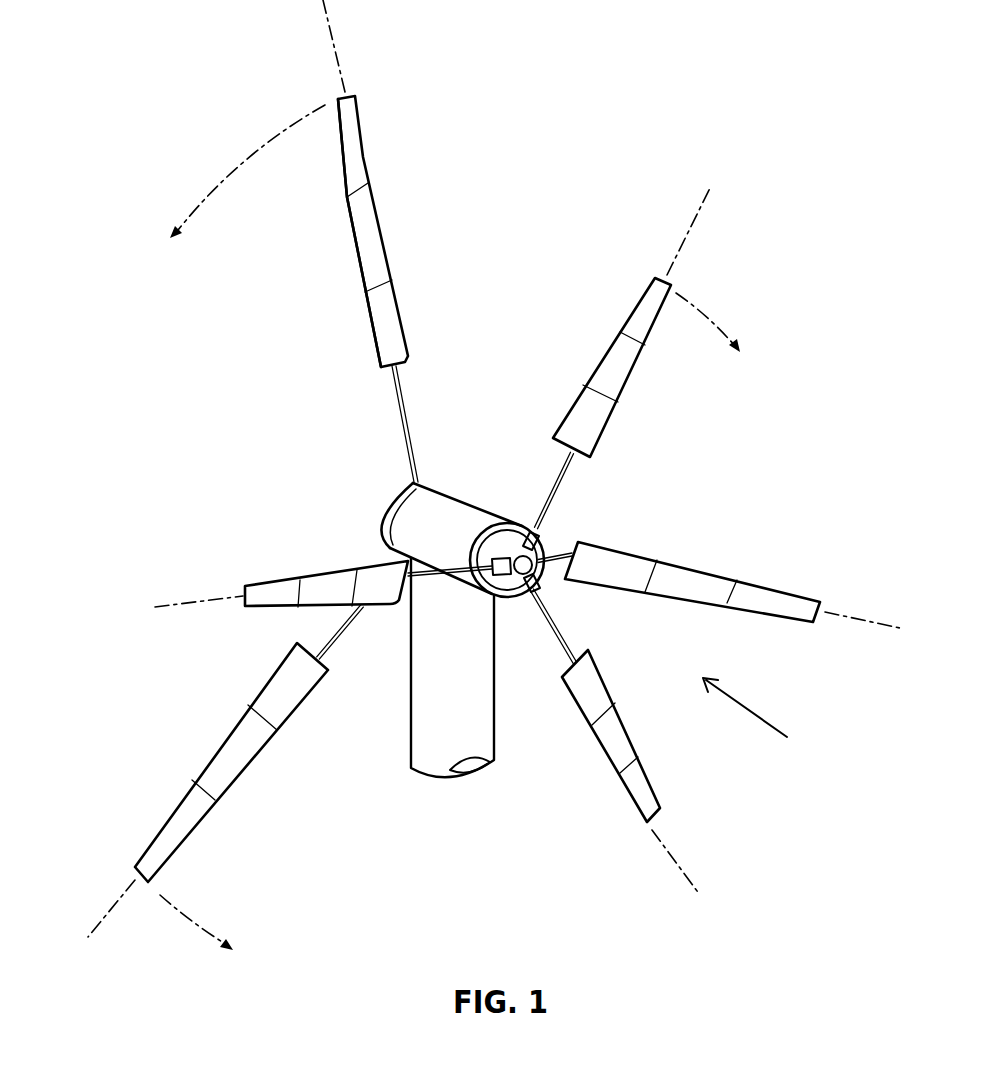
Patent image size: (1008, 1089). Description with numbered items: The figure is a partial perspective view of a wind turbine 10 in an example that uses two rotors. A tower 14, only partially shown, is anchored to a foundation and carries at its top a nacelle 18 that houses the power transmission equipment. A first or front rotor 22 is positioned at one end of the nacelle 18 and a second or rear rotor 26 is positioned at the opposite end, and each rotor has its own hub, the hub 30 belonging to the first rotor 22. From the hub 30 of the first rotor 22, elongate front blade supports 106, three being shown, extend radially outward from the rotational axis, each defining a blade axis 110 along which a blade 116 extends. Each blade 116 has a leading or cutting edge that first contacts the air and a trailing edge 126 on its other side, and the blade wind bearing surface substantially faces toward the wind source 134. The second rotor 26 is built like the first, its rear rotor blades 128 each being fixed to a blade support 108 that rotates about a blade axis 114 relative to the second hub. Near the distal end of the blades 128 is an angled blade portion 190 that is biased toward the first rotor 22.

The wind turbine 10 is at (805, 321).
The tower 14 is at (426, 722).
The nacelle 18 is at (380, 502).
The first rotor 22 is at (645, 389).
The second rotor 26 is at (355, 344).
The hub 30 is at (511, 580).
The front blade support 106 is at (566, 498).
The blade support 108 is at (418, 412).
The blade axis 110 is at (688, 232).
The blade axis 114 is at (334, 44).
The blade 116 is at (636, 712).
The trailing edge 126 is at (396, 215).
The rear rotor blade 128 is at (346, 241).
The wind source 134 is at (768, 720).
The angled blade portion 190 is at (337, 133).